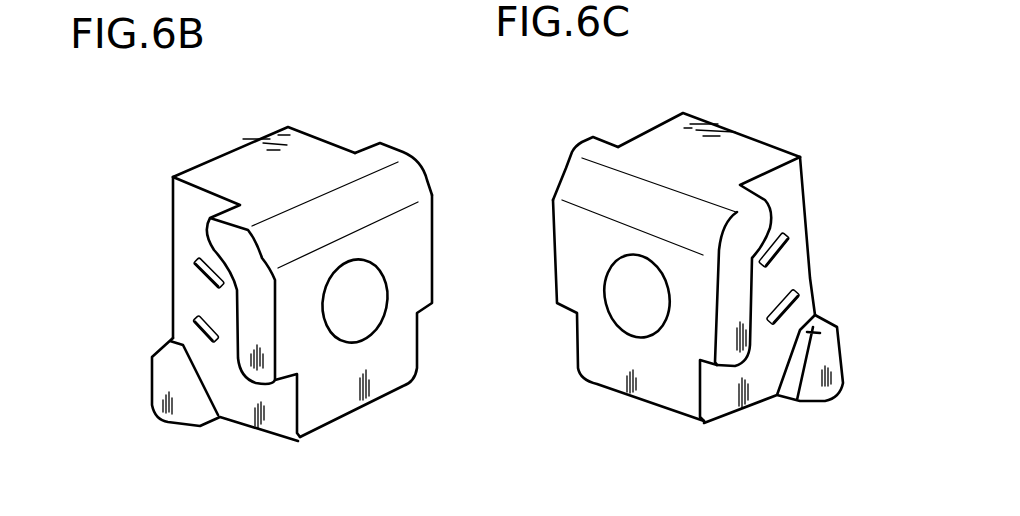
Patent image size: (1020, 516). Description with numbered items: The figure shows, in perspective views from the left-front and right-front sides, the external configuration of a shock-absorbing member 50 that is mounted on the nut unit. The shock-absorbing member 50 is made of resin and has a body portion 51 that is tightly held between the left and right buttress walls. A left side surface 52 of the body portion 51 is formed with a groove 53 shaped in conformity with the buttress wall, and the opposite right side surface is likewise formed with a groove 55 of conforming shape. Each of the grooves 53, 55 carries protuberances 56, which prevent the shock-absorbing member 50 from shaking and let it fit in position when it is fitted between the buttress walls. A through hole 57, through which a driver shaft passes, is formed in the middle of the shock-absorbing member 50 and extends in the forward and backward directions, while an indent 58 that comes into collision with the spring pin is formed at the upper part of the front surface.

In FIG. 6B, the shock-absorbing member 50 is at (352, 115).
In FIG. 6C, the shock-absorbing member 50 is at (741, 109).
In FIG. 6B, the body portion 51 is at (220, 157).
In FIG. 6C, the body portion 51 is at (765, 150).
In FIG. 6B, the left side surface 52 is at (190, 280).
In FIG. 6C, the left side surface 52 is at (787, 267).
In FIG. 6B, the groove 53 is at (313, 130).
In FIG. 6C, the groove 53 is at (785, 193).
In FIG. 6B, the groove 55 is at (180, 215).
In FIG. 6C, the groove 55 is at (652, 125).
In FIG. 6B, the protuberances 56 is at (200, 330).
In FIG. 6C, the protuberances 56 is at (792, 304).
In FIG. 6B, the through hole 57 is at (363, 310).
In FIG. 6C, the through hole 57 is at (628, 293).
In FIG. 6B, the indent 58 is at (393, 190).
In FIG. 6C, the indent 58 is at (585, 178).